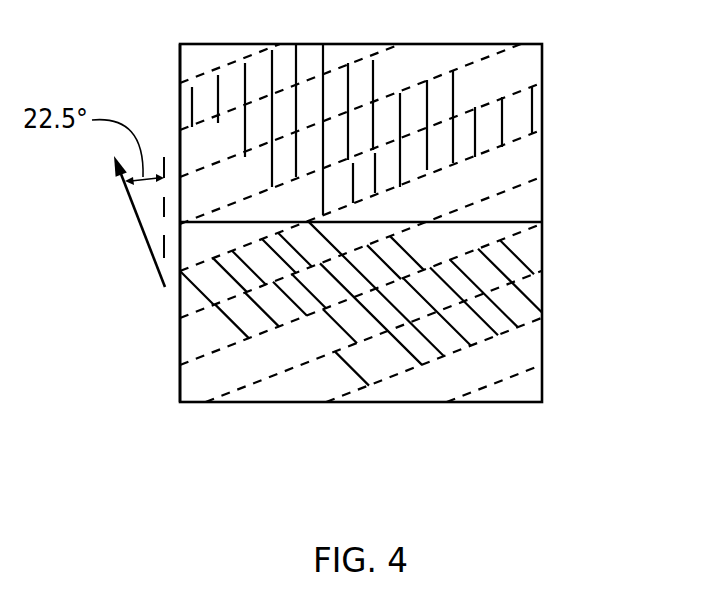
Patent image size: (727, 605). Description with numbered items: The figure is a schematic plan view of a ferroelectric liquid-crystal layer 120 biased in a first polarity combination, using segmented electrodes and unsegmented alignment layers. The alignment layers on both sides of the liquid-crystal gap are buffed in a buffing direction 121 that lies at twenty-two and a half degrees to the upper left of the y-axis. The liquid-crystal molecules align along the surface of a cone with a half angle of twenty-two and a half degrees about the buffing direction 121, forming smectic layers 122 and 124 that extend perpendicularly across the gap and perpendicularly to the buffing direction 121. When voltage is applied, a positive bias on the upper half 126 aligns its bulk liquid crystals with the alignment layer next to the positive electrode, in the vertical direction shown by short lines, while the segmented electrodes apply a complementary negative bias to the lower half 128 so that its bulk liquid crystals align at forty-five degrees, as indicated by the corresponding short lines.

The ferroelectric liquid-crystal layer 120 is at (533, 432).
The buffing direction 121 is at (131, 210).
The smectic layer 122 is at (540, 107).
The smectic layer 124 is at (543, 288).
The upper half 126 is at (162, 86).
The lower half 128 is at (162, 363).